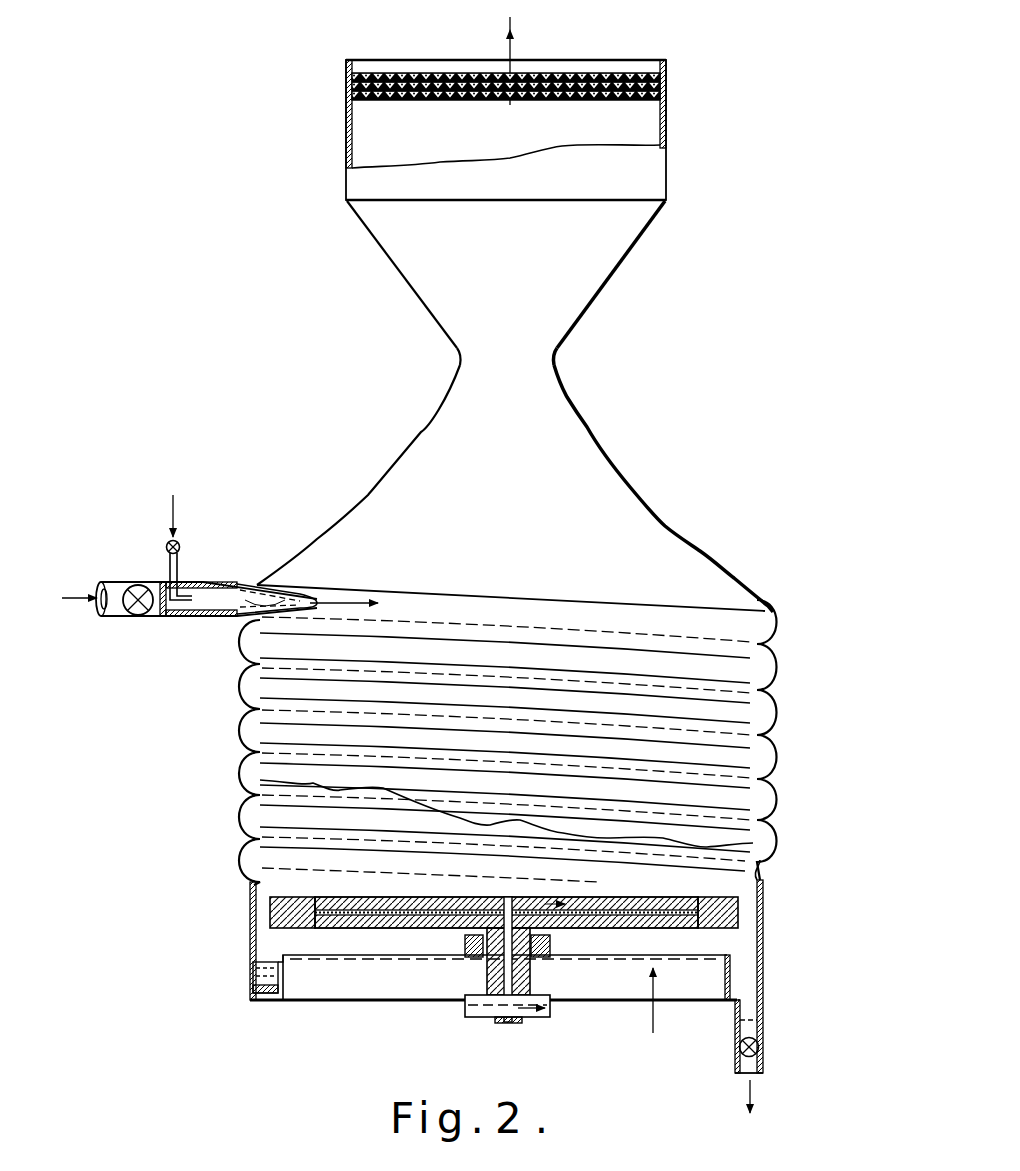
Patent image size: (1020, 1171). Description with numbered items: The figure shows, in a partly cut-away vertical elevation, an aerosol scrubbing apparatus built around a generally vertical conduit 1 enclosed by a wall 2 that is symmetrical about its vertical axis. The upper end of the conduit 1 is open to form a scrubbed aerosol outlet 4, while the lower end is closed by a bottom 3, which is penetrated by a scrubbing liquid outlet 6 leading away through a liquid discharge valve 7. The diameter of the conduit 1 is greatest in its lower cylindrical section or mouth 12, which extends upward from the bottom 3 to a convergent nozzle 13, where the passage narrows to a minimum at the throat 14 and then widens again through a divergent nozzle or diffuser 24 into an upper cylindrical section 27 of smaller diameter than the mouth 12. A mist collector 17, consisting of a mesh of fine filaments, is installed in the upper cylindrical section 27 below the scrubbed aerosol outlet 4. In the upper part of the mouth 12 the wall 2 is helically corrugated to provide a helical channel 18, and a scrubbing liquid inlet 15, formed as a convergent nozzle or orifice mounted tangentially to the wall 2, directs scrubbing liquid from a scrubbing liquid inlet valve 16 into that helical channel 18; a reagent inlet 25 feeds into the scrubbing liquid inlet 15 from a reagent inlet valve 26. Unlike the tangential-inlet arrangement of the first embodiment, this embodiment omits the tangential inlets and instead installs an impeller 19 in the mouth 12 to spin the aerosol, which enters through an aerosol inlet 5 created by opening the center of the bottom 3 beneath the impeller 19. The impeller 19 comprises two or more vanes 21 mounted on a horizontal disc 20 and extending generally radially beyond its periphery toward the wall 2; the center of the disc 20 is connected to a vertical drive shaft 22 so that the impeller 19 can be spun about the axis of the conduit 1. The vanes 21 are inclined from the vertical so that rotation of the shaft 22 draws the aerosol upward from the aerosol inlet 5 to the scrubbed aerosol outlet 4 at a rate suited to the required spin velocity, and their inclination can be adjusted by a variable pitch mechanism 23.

The conduit 1 is at (449, 657).
The wall 2 is at (688, 547).
The bottom 3 is at (267, 1001).
The scrubbed aerosol outlet 4 is at (578, 58).
The aerosol inlet 5 is at (685, 980).
The scrubbing liquid outlet 6 is at (757, 1028).
The liquid discharge valve 7 is at (758, 1055).
The mouth 12 is at (278, 942).
The convergent nozzle 13 is at (517, 447).
The throat 14 is at (507, 363).
The scrubbing liquid inlet 15 is at (310, 603).
The scrubbing liquid inlet valve 16 is at (140, 617).
The mist collector 17 is at (666, 88).
The helical channel 18 is at (740, 668).
The impeller 19 is at (473, 1007).
The horizontal disc 20 is at (377, 928).
The vanes 21 is at (505, 905).
The vertical drive shaft 22 is at (528, 972).
The variable pitch mechanism 23 is at (520, 1025).
The divergent nozzle 24 is at (580, 242).
The reagent inlet 25 is at (192, 597).
The reagent inlet valve 26 is at (170, 542).
The upper cylindrical section 27 is at (620, 157).